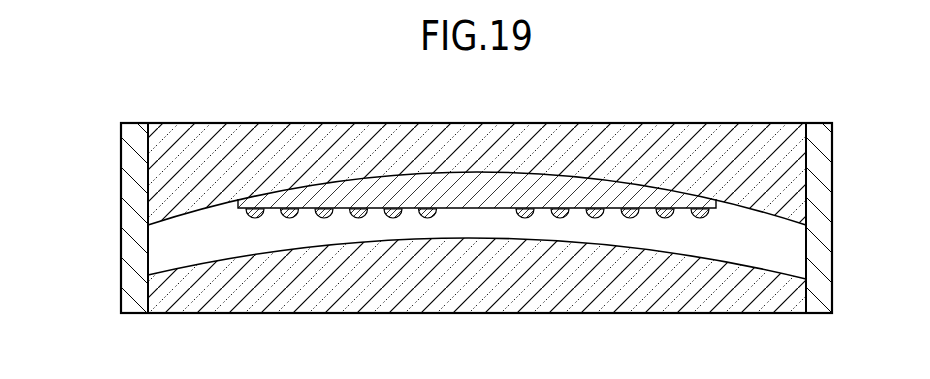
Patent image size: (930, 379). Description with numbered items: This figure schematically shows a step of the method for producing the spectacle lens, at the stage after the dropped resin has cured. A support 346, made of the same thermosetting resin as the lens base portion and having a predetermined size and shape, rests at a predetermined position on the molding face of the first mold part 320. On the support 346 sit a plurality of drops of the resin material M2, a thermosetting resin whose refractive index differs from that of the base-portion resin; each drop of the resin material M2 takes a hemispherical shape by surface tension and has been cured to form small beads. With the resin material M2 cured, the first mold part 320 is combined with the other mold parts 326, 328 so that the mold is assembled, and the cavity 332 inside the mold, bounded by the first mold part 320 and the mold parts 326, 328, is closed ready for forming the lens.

The first mold part 320 is at (785, 140).
The mold part 326 is at (595, 313).
The mold part 328 is at (133, 289).
The cavity 332 is at (782, 248).
The support 346 is at (472, 190).
The resin material M2 is at (357, 207).